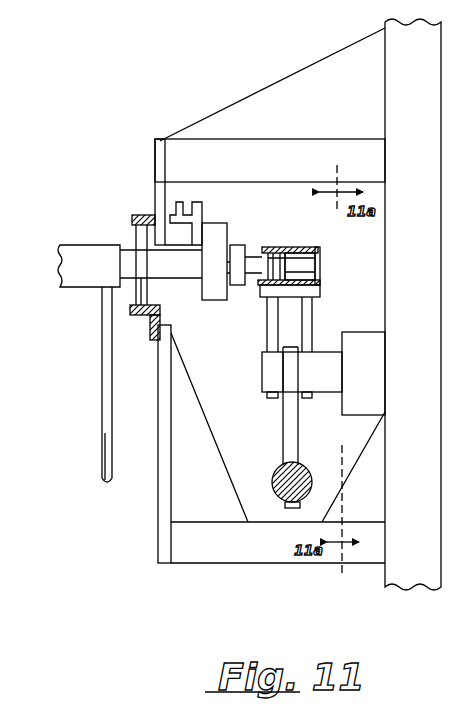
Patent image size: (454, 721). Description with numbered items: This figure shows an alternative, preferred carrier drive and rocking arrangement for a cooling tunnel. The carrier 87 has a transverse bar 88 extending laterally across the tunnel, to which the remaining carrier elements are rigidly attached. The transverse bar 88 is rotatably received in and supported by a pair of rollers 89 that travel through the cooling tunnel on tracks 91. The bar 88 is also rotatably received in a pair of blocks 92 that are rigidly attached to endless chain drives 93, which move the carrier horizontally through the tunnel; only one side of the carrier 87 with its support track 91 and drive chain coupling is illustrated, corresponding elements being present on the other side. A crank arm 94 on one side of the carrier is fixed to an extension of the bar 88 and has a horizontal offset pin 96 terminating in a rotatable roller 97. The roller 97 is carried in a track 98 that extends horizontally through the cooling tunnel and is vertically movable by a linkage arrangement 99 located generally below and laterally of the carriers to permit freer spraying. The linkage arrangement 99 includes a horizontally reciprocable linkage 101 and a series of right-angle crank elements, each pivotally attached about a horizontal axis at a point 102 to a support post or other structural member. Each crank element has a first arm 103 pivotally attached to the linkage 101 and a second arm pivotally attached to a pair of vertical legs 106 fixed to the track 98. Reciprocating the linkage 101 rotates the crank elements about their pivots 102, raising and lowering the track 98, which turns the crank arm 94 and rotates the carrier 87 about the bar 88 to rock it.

The carrier 87 is at (80, 476).
The transverse bar 88 is at (98, 255).
The rollers 89 is at (140, 263).
The tracks 91 is at (138, 317).
The blocks 92 is at (213, 296).
The endless chain drives 93 is at (192, 202).
The crank arm 94 is at (238, 245).
The horizontal offset pin 96 is at (262, 245).
The roller 97 is at (288, 263).
The track 98 is at (312, 246).
The linkage arrangement 99 is at (266, 510).
The horizontally reciprocable linkage 101 is at (272, 473).
The pivot point 102 is at (332, 373).
The first arm 103 is at (288, 428).
The vertical legs 106 is at (313, 320).